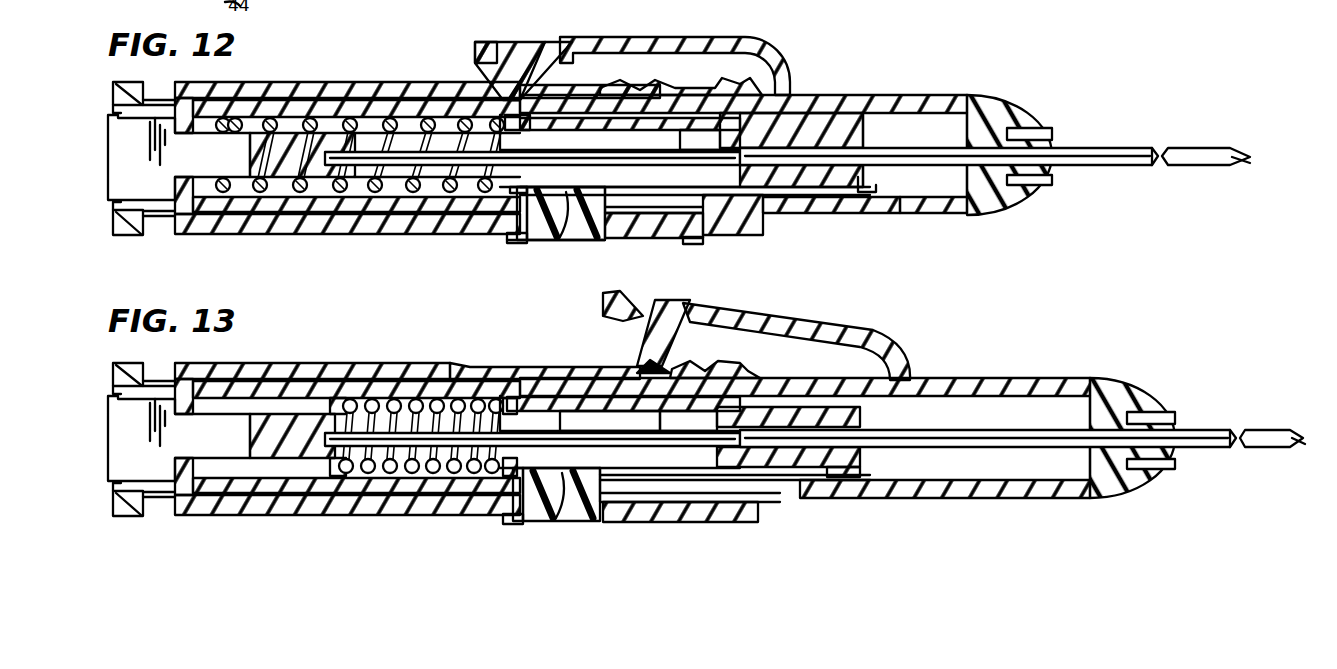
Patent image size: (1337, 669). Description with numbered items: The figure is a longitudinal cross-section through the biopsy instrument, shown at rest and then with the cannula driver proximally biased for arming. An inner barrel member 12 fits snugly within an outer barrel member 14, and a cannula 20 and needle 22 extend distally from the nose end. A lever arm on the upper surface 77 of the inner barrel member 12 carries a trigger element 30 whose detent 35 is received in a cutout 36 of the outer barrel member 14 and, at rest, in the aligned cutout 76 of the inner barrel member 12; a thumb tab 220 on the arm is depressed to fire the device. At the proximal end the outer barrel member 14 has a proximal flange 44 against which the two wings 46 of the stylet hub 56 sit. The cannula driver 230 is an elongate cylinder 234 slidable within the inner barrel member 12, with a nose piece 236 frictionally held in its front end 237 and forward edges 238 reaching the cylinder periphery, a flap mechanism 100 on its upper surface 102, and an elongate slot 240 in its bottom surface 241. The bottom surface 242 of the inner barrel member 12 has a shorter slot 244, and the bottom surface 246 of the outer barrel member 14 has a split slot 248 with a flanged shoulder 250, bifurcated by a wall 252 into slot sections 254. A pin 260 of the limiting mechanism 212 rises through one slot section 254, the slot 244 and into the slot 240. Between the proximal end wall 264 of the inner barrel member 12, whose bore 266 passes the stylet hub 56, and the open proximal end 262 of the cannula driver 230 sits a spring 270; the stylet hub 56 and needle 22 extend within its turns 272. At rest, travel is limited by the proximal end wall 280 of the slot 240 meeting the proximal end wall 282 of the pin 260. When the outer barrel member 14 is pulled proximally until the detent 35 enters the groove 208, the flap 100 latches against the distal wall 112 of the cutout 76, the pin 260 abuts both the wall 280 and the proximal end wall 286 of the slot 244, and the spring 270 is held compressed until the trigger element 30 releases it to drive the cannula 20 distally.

In FIG. 12, the inner barrel member 12 is at (823, 99).
In FIG. 13, the inner barrel member 12 is at (805, 424).
In FIG. 12, the outer barrel member 14 is at (374, 87).
In FIG. 13, the outer barrel member 14 is at (407, 371).
In FIG. 12, the cannula 20 is at (1195, 152).
In FIG. 13, the cannula 20 is at (988, 438).
In FIG. 12, the needle 22 is at (1240, 162).
In FIG. 13, the needle 22 is at (1272, 438).
In FIG. 12, the trigger element 30 is at (540, 58).
In FIG. 13, the trigger element 30 is at (773, 327).
In FIG. 12, the detent 35 is at (528, 122).
In FIG. 13, the detent 35 is at (620, 400).
In FIG. 12, the cutout 36 is at (476, 65).
In FIG. 13, the cutout 36 is at (623, 306).
In FIG. 12, the proximal flange 44 is at (128, 90).
In FIG. 13, the proximal flange 44 is at (144, 439).
In FIG. 12, the wings 46 is at (108, 155).
In FIG. 13, the wings 46 is at (179, 438).
In FIG. 12, the stylet hub 56 is at (245, 165).
In FIG. 13, the stylet hub 56 is at (292, 436).
In FIG. 12, the cutout 76 is at (480, 98).
In FIG. 13, the cutout 76 is at (466, 378).
In FIG. 13, the upper surface 77 is at (369, 419).
In FIG. 12, the flap mechanism 100 is at (672, 120).
In FIG. 13, the flap mechanism 100 is at (688, 415).
In FIG. 12, the upper surface 102 is at (612, 118).
In FIG. 13, the upper surface 102 is at (610, 413).
In FIG. 13, the distal wall 112 is at (715, 360).
In FIG. 13, the groove 208 is at (673, 355).
In FIG. 12, the limiting mechanism 212 is at (573, 243).
In FIG. 13, the limiting mechanism 212 is at (690, 514).
In FIG. 12, the thumb tab 220 is at (512, 45).
In FIG. 12, the cannula driver 230 is at (880, 135).
In FIG. 13, the cannula driver 230 is at (1021, 424).
In FIG. 12, the cylinder 234 is at (790, 110).
In FIG. 13, the cylinder 234 is at (808, 477).
In FIG. 12, the nose piece 236 is at (890, 214).
In FIG. 12, the front end 237 is at (845, 113).
In FIG. 12, the forward edges 238 is at (868, 190).
In FIG. 12, the slot 240 is at (825, 197).
In FIG. 13, the slot 240 is at (735, 505).
In FIG. 12, the bottom surface 241 is at (524, 195).
In FIG. 12, the bottom surface 242 is at (905, 200).
In FIG. 12, the slot 244 is at (730, 215).
In FIG. 13, the slot 244 is at (866, 497).
In FIG. 12, the bottom surface 246 is at (435, 240).
In FIG. 12, the split slot 248 is at (662, 242).
In FIG. 12, the shoulder 250 is at (528, 242).
In FIG. 12, the wall 252 is at (635, 242).
In FIG. 12, the slot sections 254 is at (670, 210).
In FIG. 12, the pin 260 is at (585, 200).
In FIG. 13, the pin 260 is at (567, 516).
In FIG. 12, the proximal end 262 is at (492, 220).
In FIG. 13, the proximal end 262 is at (532, 487).
In FIG. 12, the end wall 264 is at (213, 236).
In FIG. 13, the end wall 264 is at (243, 501).
In FIG. 12, the bore 266 is at (213, 132).
In FIG. 13, the bore 266 is at (184, 396).
In FIG. 12, the spring 270 is at (370, 128).
In FIG. 13, the spring 270 is at (423, 471).
In FIG. 12, the turns 272 is at (356, 238).
In FIG. 12, the proximal end wall 280 is at (556, 200).
In FIG. 13, the proximal end wall 280 is at (485, 512).
In FIG. 12, the proximal end wall 282 is at (522, 242).
In FIG. 13, the proximal end wall 282 is at (495, 545).
In FIG. 13, the proximal end wall 286 is at (562, 510).